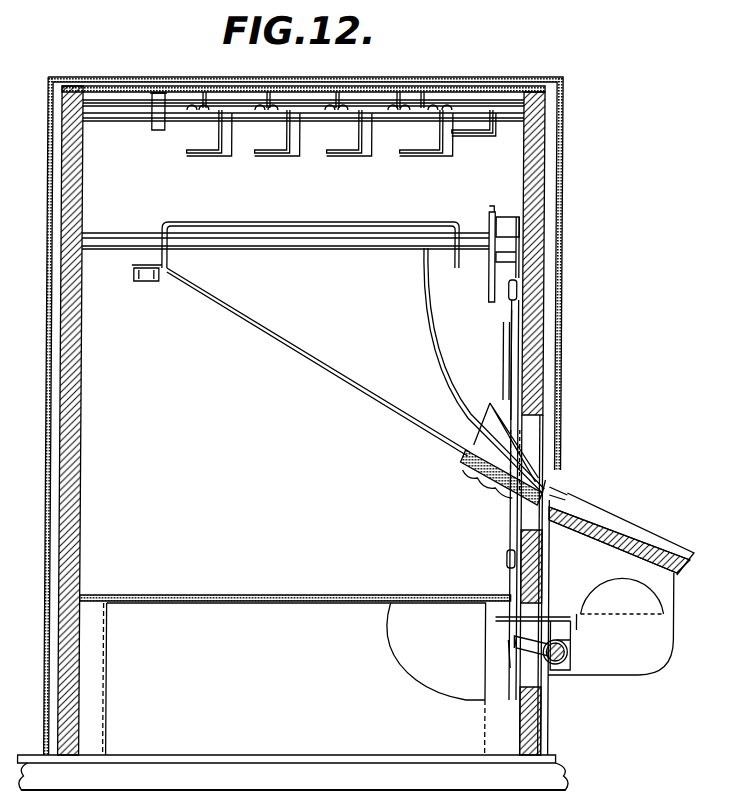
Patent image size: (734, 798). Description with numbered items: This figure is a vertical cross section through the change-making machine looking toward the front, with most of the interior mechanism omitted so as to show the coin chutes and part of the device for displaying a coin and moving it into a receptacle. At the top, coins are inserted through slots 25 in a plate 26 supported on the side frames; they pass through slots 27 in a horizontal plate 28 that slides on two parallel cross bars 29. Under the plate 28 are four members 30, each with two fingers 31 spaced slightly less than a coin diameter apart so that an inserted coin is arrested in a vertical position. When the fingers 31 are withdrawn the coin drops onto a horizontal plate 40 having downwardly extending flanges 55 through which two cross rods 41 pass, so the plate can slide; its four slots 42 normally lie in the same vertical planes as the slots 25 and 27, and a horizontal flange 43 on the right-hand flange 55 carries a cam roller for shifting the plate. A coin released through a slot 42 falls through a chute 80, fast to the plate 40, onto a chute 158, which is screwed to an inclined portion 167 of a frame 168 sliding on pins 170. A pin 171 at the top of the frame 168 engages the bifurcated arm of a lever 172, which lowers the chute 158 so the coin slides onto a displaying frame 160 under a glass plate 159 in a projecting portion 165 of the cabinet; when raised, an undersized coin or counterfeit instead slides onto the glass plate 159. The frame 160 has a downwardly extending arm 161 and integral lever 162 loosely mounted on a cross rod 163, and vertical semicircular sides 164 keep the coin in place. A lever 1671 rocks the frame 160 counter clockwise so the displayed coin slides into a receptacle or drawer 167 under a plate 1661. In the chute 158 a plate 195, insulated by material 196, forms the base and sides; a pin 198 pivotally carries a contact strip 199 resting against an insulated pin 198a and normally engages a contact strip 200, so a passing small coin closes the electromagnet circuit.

The slots 25 is at (205, 90).
The plate 26 is at (390, 88).
The slots 27 is at (205, 112).
The horizontal plate 28 is at (152, 100).
The cross bars 29 is at (108, 118).
The members 30 is at (428, 158).
The fingers 31 is at (205, 160).
The horizontal plate 40 is at (396, 226).
The cross rods 41 is at (125, 238).
The slots 42 is at (265, 222).
The horizontal flange 43 is at (133, 266).
The flanges 55 is at (172, 264).
The chute 80 is at (276, 334).
The chute 158 is at (490, 430).
The glass plate 159 is at (672, 555).
The displaying frame 160 is at (678, 625).
The arm 161 is at (562, 645).
The lever 162 is at (574, 628).
The cross rod 163 is at (566, 664).
The semicircular sides 164 is at (608, 586).
The projecting portion 165 is at (662, 672).
The receptacle or drawer 167 is at (161, 608).
The plate 1661 is at (347, 600).
The lever 1671 is at (512, 655).
The frame 168 is at (513, 536).
The pins 170 is at (518, 290).
The pin 171 is at (490, 216).
The lever 172 is at (490, 280).
The plate 195 is at (548, 478).
The insulating material 196 is at (565, 496).
The rod or pin 198 is at (505, 328).
The insulated pin 198a is at (505, 352).
The contact strip 199 is at (505, 383).
The contact strip 200 is at (518, 340).